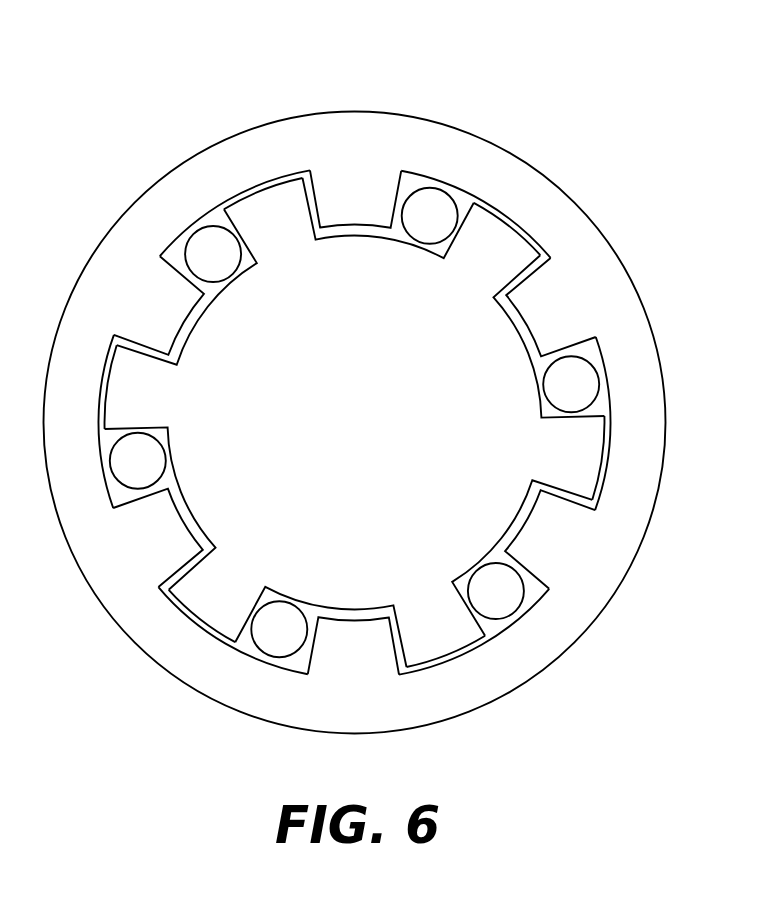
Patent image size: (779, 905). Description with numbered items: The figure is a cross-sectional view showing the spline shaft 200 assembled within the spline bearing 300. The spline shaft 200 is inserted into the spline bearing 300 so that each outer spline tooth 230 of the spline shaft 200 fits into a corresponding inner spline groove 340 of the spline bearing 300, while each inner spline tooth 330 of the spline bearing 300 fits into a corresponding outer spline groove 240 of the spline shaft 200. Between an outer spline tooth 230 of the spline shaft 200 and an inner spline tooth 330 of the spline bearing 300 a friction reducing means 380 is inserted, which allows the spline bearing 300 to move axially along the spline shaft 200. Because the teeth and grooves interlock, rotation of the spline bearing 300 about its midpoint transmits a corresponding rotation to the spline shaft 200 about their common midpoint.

The spline shaft 200 is at (440, 480).
The outer spline tooth 230 is at (597, 445).
The outer spline groove 240 is at (520, 330).
The spline bearing 300 is at (237, 153).
The inner spline tooth 330 is at (338, 228).
The inner spline groove 340 is at (405, 178).
The friction reducing means 380 is at (433, 202).